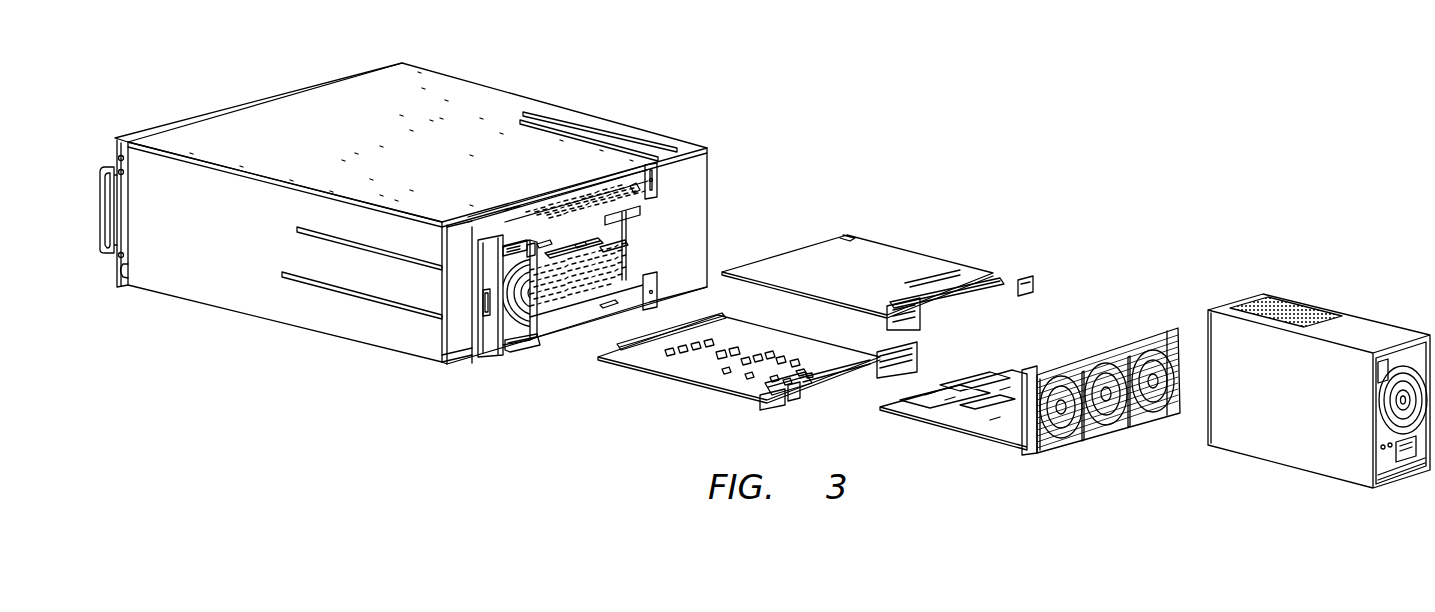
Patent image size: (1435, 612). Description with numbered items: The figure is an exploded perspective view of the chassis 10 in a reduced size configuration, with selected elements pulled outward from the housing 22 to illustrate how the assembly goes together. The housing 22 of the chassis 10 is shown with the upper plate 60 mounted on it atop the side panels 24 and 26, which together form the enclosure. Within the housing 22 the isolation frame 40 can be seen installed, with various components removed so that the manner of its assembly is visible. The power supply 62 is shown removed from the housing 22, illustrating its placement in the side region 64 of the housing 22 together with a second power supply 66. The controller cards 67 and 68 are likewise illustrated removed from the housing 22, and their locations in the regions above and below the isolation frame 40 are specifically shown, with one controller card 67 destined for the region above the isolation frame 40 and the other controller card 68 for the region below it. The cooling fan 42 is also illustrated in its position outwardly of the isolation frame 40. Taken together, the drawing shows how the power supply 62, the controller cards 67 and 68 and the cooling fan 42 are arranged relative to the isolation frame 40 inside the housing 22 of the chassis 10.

The chassis 10 is at (862, 135).
The housing 22 is at (487, 87).
The side panel 24 is at (226, 248).
The side panel 26 is at (587, 117).
The isolation frame 40 is at (580, 203).
The cooling fan 42 is at (1103, 357).
The upper plate 60 is at (422, 83).
The power supply 62 is at (1377, 330).
The side region 64 is at (687, 213).
The second power supply 66 is at (462, 350).
The controller card 67 is at (897, 252).
The controller card 68 is at (693, 375).